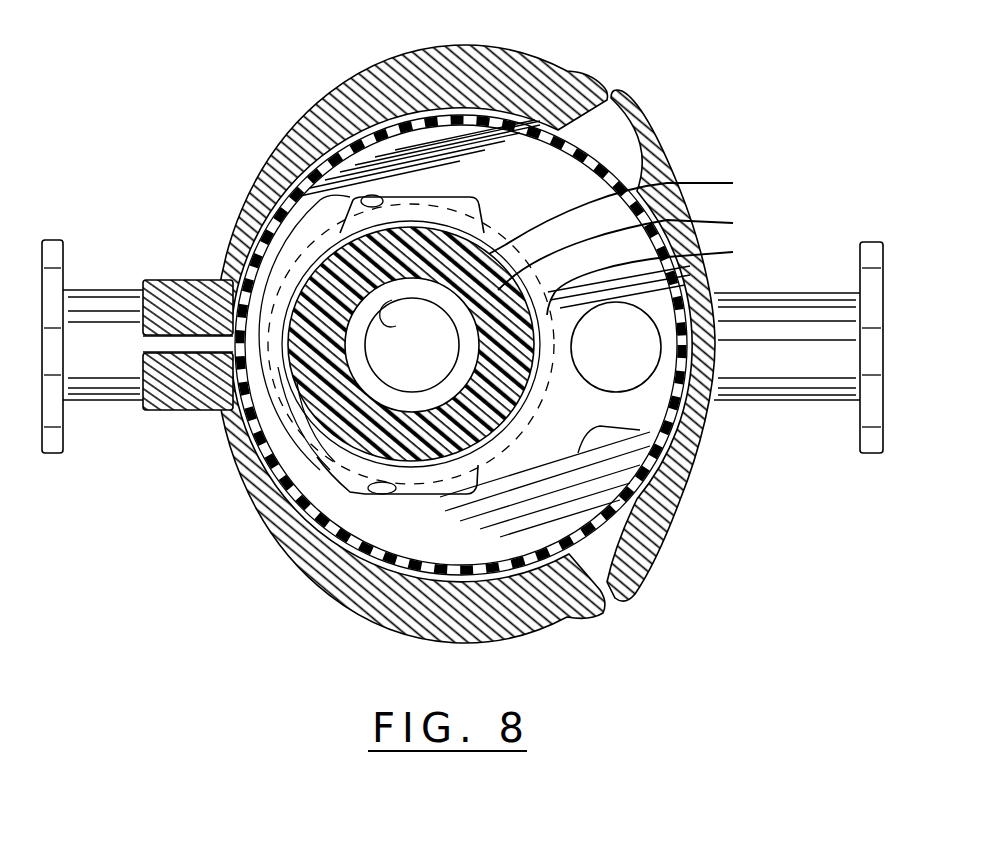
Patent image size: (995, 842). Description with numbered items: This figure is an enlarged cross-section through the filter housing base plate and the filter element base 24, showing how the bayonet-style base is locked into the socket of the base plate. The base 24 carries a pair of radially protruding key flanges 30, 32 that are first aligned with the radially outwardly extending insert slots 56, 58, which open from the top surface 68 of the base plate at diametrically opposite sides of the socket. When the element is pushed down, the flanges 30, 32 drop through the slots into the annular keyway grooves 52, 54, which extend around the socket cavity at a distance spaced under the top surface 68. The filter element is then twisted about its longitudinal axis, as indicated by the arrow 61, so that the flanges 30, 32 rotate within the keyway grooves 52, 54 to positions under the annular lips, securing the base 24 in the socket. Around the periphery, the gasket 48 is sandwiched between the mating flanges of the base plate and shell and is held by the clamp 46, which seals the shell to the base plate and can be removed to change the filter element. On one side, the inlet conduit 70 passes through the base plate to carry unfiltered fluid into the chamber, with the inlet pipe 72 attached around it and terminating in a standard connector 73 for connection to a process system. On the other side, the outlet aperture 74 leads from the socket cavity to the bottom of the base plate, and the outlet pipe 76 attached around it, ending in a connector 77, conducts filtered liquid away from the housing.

The filter element base 24 is at (526, 339).
The key flange 30 is at (290, 420).
The key flange 32 is at (519, 344).
The clamp 46 is at (537, 50).
The gasket 48 is at (628, 130).
The keyway groove 52 is at (400, 483).
The keyway groove 54 is at (482, 233).
The insert slot 56 is at (383, 482).
The insert slot 58 is at (347, 197).
The arrow 61 is at (510, 319).
The top surface 68 is at (690, 440).
The inlet conduit 70 is at (620, 372).
The inlet pipe 72 is at (765, 293).
The connector 73 is at (870, 242).
The outlet aperture 74 is at (330, 253).
The outlet pipe 76 is at (108, 290).
The connector 77 is at (55, 240).